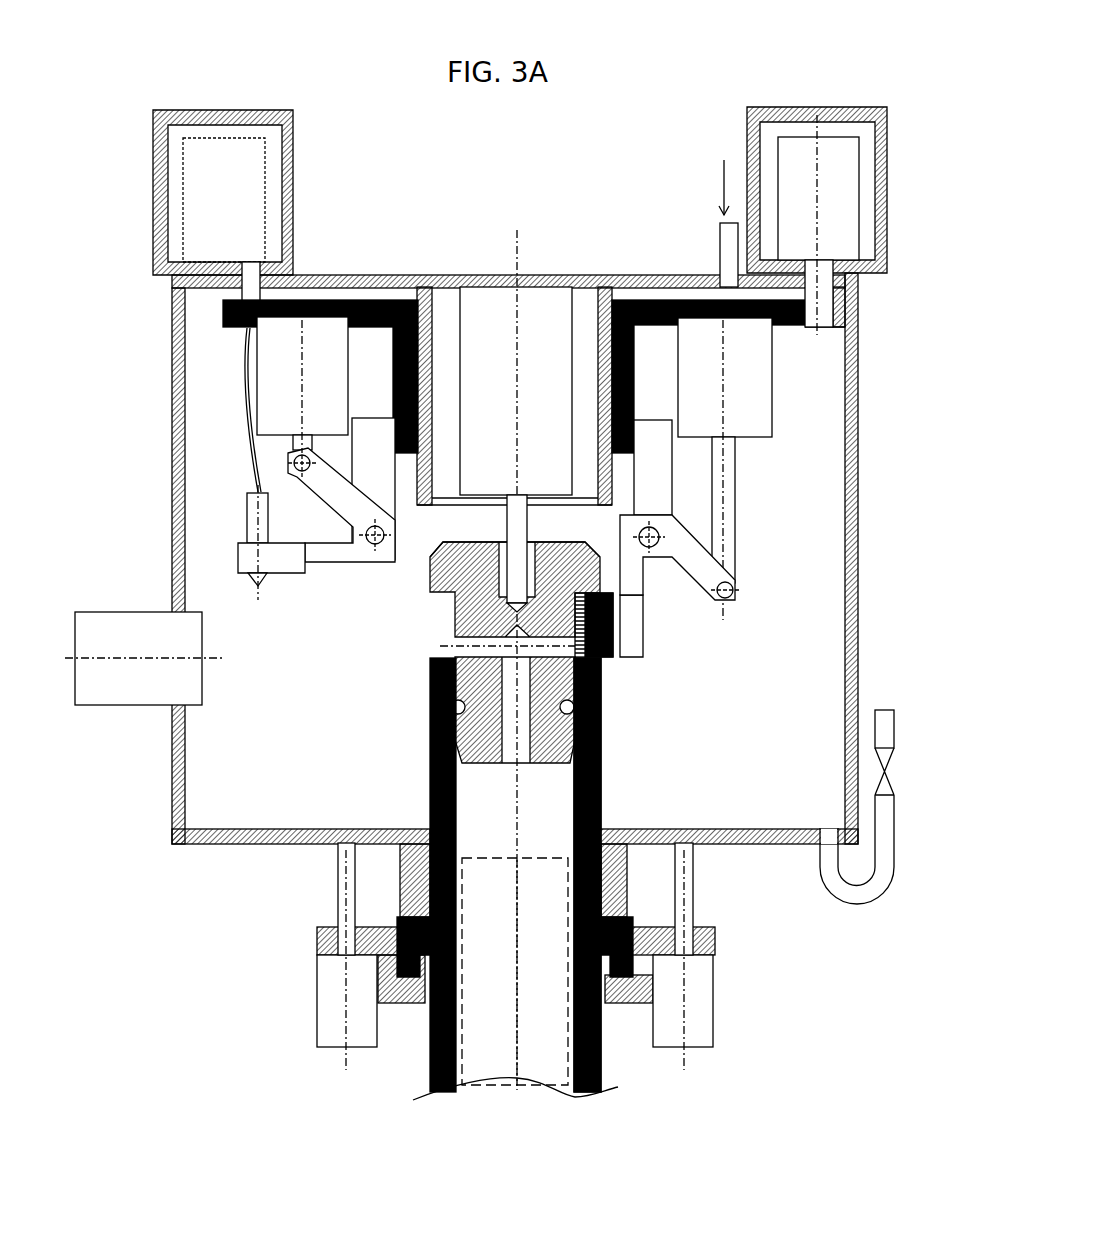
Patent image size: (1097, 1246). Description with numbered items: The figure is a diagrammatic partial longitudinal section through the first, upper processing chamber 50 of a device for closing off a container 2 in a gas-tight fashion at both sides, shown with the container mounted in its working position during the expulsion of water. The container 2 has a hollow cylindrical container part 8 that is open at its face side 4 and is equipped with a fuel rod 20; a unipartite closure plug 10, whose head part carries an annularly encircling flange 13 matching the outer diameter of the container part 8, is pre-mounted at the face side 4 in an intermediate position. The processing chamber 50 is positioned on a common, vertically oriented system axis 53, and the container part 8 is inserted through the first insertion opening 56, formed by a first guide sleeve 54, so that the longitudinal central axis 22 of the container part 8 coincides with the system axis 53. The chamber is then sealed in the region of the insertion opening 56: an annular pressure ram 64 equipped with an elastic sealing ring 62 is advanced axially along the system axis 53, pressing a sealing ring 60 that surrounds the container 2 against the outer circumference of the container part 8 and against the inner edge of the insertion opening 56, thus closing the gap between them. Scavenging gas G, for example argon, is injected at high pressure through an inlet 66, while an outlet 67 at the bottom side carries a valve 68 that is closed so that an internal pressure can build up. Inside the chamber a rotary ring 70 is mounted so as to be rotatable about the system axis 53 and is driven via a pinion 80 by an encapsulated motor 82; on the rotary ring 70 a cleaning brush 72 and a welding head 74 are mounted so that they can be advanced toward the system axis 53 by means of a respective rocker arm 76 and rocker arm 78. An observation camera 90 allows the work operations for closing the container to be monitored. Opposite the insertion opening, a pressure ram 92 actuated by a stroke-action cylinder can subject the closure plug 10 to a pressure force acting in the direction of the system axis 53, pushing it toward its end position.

The container 2 is at (605, 772).
The face side 4 is at (440, 657).
The container part 8 is at (433, 773).
The closure plug 10 is at (446, 575).
The flange 13 is at (450, 572).
The fuel rod 20 is at (475, 1030).
The longitudinal central axis 22 is at (517, 1030).
The first processing chamber 50 is at (520, 197).
The system axis 53 is at (518, 328).
The first guide sleeve 54 is at (622, 843).
The first insertion opening 56 is at (625, 900).
The sealing ring 60 is at (402, 917).
The elastic sealing ring 62 is at (653, 985).
The annular pressure ram 64 is at (715, 940).
The inlet 66 is at (728, 242).
The outlet 67 is at (883, 723).
The valve 68 is at (888, 770).
The rotary ring 70 is at (380, 303).
The cleaning brush 72 is at (637, 622).
The welding head 74 is at (252, 518).
The rocker arm 76 is at (697, 557).
The rocker arm 78 is at (320, 487).
The pinion 80 is at (828, 308).
The encapsulated motor 82 is at (800, 158).
The observation camera 90 is at (122, 687).
The pressure ram 92 is at (513, 513).
The scavenging gas G is at (721, 173).